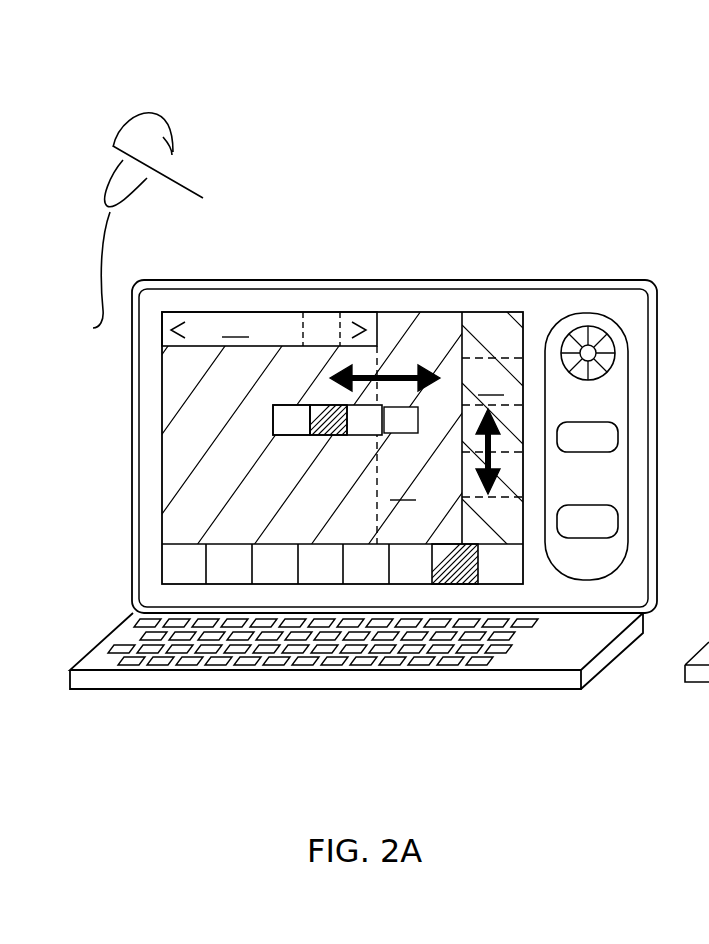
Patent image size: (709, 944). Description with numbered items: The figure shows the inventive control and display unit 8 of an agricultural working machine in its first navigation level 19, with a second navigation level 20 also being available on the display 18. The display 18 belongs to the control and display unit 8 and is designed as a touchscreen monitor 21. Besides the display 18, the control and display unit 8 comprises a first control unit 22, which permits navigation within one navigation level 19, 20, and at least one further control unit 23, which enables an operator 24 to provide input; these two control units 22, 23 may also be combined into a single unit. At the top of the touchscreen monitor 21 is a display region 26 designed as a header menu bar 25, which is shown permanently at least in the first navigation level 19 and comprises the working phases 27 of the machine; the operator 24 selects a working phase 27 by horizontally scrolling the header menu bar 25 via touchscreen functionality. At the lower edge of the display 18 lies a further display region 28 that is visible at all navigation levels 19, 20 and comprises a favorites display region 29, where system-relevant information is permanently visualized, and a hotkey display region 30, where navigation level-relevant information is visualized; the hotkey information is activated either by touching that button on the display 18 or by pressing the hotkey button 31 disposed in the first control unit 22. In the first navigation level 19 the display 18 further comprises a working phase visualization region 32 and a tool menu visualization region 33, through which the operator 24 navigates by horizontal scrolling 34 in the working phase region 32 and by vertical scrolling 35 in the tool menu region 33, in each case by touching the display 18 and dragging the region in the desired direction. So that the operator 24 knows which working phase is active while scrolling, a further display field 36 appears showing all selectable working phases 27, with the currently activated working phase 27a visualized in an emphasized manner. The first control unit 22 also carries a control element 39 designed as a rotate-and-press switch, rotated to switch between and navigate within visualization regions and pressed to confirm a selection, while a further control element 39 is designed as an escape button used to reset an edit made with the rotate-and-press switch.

The control and display unit 8 is at (582, 244).
The display 18 is at (227, 502).
The first navigation level 19 is at (295, 428).
The second navigation level 20 is at (708, 686).
The touchscreen monitor 21 is at (339, 300).
The first control unit 22 is at (612, 382).
The further control unit 23 is at (484, 652).
The operator 24 is at (162, 140).
The header menu bar 25 is at (352, 243).
The display region 26 is at (178, 330).
The working phases 27 is at (345, 420).
The currently activated working phase 27a is at (314, 436).
The further display region 28 is at (162, 598).
The favorites display region 29 is at (185, 568).
The hotkey display region 30 is at (470, 585).
The hotkey button 31 is at (604, 505).
The working phase visualization region 32 is at (397, 445).
The tool menu visualization region 33 is at (492, 413).
The horizontal scrolling 34 is at (333, 378).
The vertical scrolling 35 is at (495, 482).
The display field 36 is at (273, 421).
The control element 39 is at (605, 350).